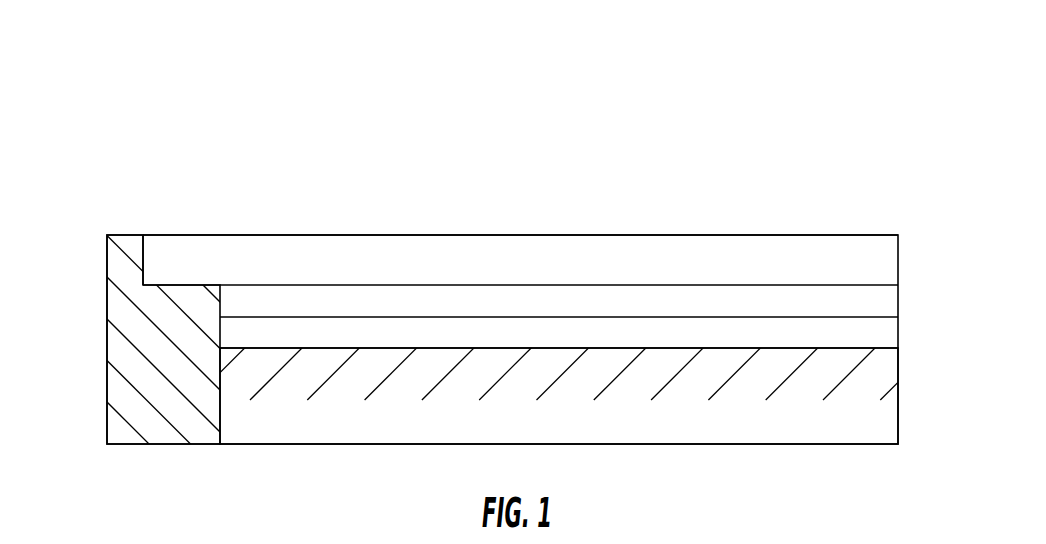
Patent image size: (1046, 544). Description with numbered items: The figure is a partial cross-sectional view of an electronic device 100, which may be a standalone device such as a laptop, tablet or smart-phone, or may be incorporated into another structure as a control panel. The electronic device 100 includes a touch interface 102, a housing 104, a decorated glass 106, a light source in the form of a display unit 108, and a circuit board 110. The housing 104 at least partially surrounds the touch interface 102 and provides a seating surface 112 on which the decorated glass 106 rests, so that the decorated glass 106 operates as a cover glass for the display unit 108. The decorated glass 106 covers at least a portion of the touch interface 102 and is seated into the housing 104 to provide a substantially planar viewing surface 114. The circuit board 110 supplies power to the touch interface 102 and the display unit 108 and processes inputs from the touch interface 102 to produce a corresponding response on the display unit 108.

The electronic device 100 is at (305, 102).
The touch interface 102 is at (765, 300).
The housing 104 is at (107, 317).
The decorated glass 106 is at (521, 248).
The display unit 108 is at (643, 334).
The circuit board 110 is at (898, 410).
The seating surface 112 is at (178, 285).
The viewing surface 114 is at (408, 210).